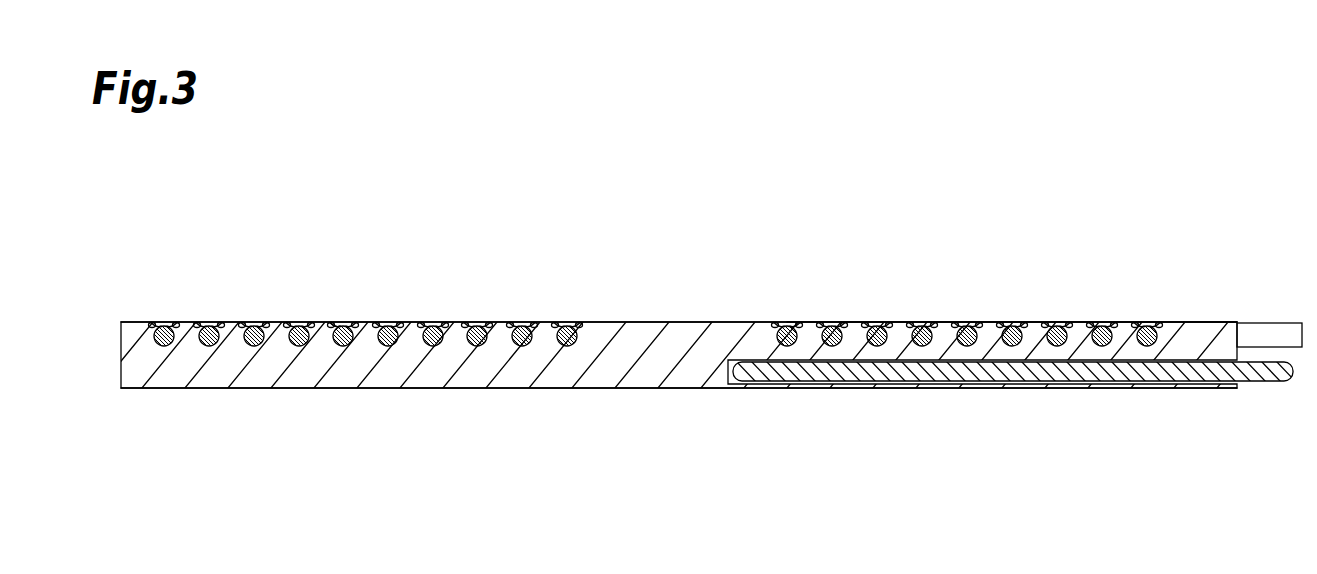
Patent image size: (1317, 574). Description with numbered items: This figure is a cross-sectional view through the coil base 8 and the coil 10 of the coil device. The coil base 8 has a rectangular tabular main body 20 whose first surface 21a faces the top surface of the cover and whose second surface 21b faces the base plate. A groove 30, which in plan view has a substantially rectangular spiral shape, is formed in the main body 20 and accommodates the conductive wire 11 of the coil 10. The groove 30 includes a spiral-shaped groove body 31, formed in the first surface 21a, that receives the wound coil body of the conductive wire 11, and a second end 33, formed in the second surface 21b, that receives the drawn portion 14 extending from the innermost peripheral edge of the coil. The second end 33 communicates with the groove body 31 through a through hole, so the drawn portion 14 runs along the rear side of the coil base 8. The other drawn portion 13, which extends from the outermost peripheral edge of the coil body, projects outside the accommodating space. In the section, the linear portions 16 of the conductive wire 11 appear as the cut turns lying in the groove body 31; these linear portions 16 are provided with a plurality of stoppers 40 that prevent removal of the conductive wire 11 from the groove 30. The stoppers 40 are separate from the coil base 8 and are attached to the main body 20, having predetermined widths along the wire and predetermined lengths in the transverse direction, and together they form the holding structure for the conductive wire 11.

The coil base 8 is at (160, 405).
The main body 20 is at (651, 362).
The first surface 21a is at (360, 322).
The second surface 21b is at (372, 390).
The coil 10 is at (283, 349).
The conductive wire 11 is at (327, 347).
The linear portions 16 is at (1105, 347).
The stoppers 40 is at (1113, 322).
The groove 30 is at (1012, 275).
The groove body 31 is at (917, 322).
The second end 33 is at (1183, 363).
The drawn portion 13 is at (1257, 323).
The drawn portion 14 is at (1014, 417).